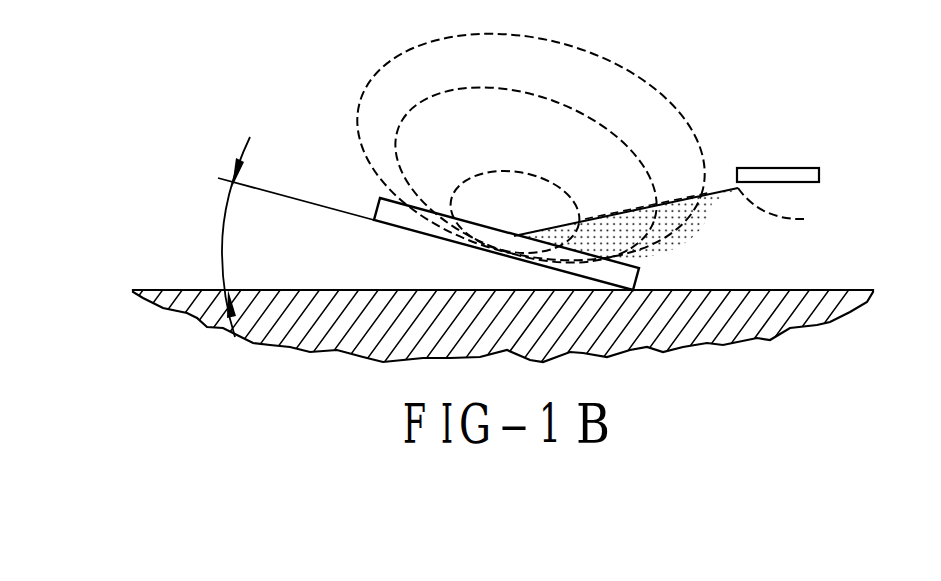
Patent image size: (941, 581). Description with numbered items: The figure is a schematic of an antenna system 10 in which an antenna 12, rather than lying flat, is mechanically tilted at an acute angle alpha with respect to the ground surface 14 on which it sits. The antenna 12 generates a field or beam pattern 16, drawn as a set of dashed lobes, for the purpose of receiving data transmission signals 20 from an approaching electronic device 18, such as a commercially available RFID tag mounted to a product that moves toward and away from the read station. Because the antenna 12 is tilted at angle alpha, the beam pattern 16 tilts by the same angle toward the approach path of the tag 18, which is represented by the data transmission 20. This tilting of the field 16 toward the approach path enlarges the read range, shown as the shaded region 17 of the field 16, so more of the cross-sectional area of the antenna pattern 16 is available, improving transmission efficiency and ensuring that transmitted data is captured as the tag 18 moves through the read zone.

The antenna system 10 is at (269, 91).
The antenna 12 is at (630, 282).
The ground surface 14 is at (848, 290).
The beam pattern 16 is at (570, 77).
The shaded region 17 is at (672, 223).
The electronic device 18 is at (800, 168).
The data transmission signals 20 is at (791, 211).